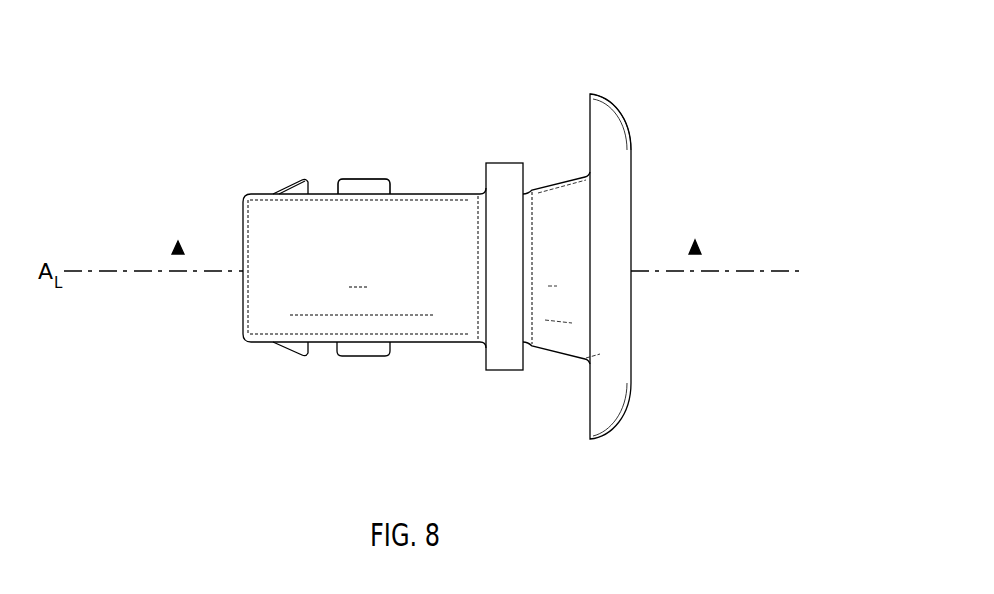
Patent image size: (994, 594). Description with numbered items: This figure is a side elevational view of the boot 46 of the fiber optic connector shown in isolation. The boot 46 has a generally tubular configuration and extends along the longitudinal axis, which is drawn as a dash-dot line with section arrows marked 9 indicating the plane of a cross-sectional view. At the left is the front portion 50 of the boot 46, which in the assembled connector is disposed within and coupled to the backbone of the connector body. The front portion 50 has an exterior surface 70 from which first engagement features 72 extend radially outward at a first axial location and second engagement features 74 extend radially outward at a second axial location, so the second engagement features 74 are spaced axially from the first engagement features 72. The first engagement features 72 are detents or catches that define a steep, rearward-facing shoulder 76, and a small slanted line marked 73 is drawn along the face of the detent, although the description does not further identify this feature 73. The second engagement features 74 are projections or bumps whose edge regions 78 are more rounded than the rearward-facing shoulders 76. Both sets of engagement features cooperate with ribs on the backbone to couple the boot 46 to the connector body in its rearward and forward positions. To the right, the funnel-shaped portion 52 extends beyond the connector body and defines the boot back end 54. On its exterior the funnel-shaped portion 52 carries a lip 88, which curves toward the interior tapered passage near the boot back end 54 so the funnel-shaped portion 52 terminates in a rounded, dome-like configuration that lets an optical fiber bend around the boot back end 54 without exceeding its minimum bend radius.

The section line 9- 9 is at (178, 271).
The boot 46 is at (689, 151).
The front portion 50 is at (423, 343).
The funnel-shaped portion 52 is at (517, 312).
The boot back end 54 is at (632, 347).
The exterior surface 70 is at (370, 264).
The first engagement features 72 is at (304, 175).
The slot 73 is at (277, 192).
The second engagement features 74 is at (362, 170).
The rearward-facing shoulder 76 is at (308, 353).
The edge regions 78 is at (388, 180).
The lip 88 is at (613, 100).